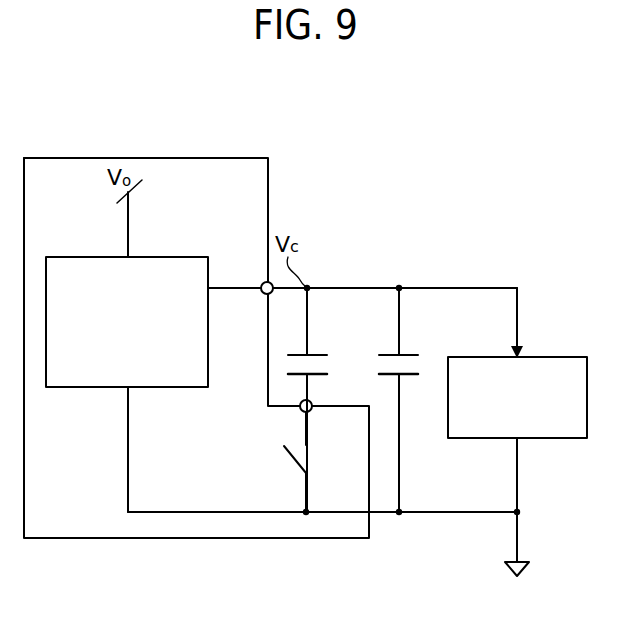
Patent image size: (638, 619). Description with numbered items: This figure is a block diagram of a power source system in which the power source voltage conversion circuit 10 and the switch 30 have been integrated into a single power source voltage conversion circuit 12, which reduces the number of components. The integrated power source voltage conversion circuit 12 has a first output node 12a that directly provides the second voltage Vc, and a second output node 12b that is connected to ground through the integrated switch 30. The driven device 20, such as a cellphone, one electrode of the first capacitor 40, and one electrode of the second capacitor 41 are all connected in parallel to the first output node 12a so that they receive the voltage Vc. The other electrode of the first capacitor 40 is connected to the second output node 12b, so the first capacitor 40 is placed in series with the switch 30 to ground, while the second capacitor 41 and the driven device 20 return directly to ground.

The power source voltage conversion circuit 10 is at (176, 256).
The power source voltage conversion circuit 12 is at (215, 157).
The first output node 12a is at (263, 294).
The second output node 12b is at (312, 411).
The driven device 20 is at (557, 357).
The switch 30 is at (296, 461).
The first capacitor 40 is at (316, 355).
The second capacitor 41 is at (409, 355).